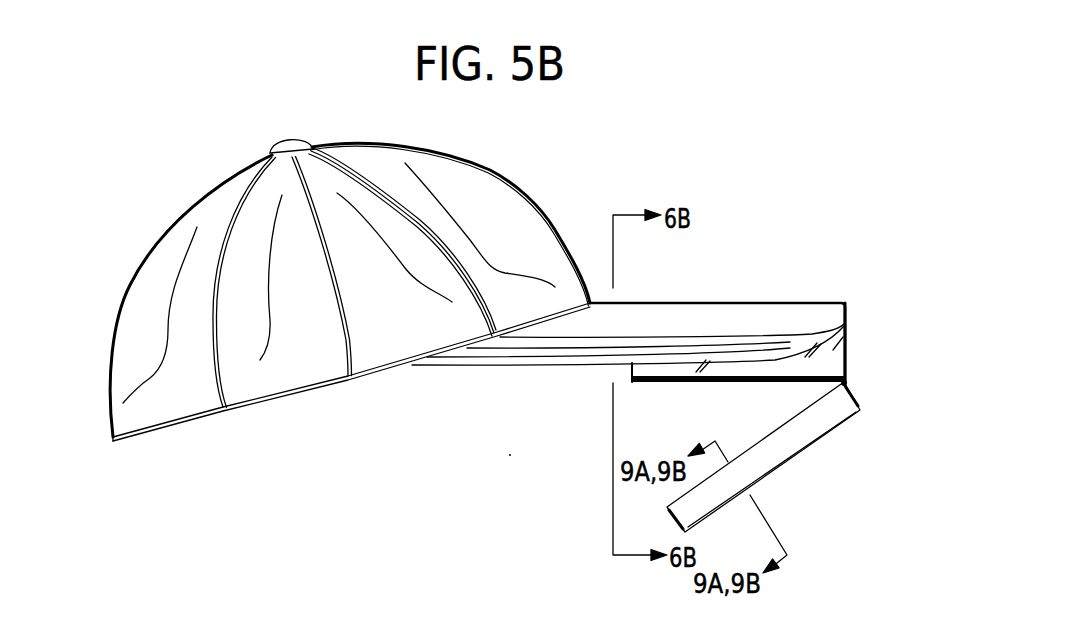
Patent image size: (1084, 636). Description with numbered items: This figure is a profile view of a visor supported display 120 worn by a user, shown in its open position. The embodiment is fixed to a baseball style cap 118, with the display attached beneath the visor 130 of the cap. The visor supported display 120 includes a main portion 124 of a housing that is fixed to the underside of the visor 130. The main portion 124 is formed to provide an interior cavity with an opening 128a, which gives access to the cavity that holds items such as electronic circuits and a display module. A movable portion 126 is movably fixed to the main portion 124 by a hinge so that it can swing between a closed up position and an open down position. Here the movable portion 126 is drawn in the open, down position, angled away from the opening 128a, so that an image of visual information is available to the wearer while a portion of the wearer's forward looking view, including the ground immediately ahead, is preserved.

The baseball style cap 118 is at (271, 460).
The visor supported display 120 is at (872, 294).
The main portion 124 is at (846, 336).
The movable portion 126 is at (826, 414).
The opening 128a is at (675, 396).
The visor 130 is at (726, 320).